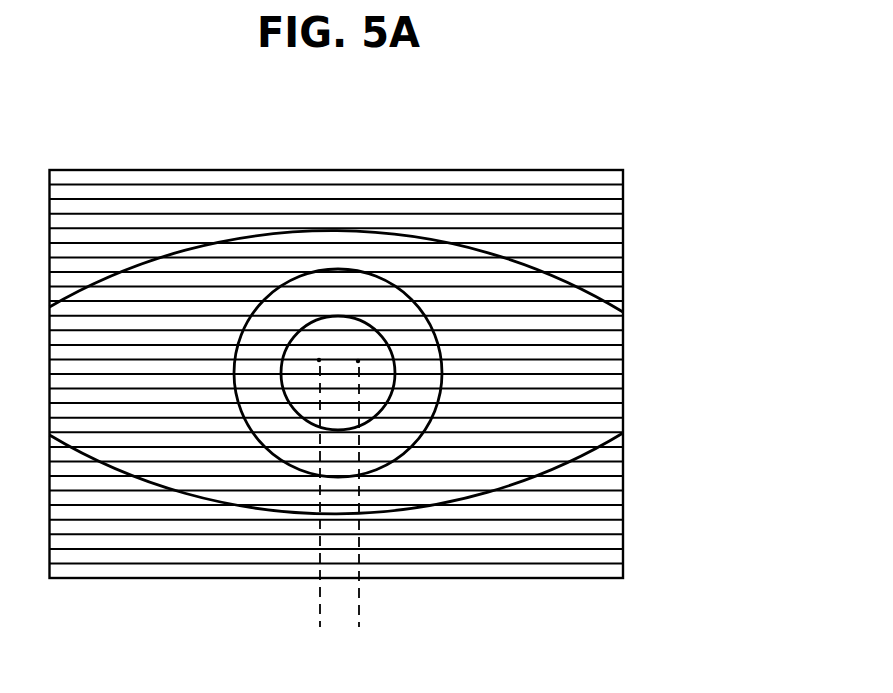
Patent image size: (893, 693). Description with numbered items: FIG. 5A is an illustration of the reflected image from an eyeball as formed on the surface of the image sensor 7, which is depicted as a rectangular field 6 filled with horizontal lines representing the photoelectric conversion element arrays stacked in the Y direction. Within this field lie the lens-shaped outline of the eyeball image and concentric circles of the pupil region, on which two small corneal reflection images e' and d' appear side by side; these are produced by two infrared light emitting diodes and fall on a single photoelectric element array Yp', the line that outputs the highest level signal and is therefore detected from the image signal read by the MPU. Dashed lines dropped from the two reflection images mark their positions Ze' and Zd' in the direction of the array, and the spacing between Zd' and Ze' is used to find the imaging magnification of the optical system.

The image plane / screen 6 is at (624, 183).
The image sensor 7 is at (571, 170).
The corneal reflection image e' is at (357, 244).
The corneal reflection image d' is at (411, 244).
The photoelectric element array Yp' is at (364, 372).
The position of corneal reflection image e' Ze' is at (325, 514).
The position of corneal reflection image d' Zd' is at (373, 515).